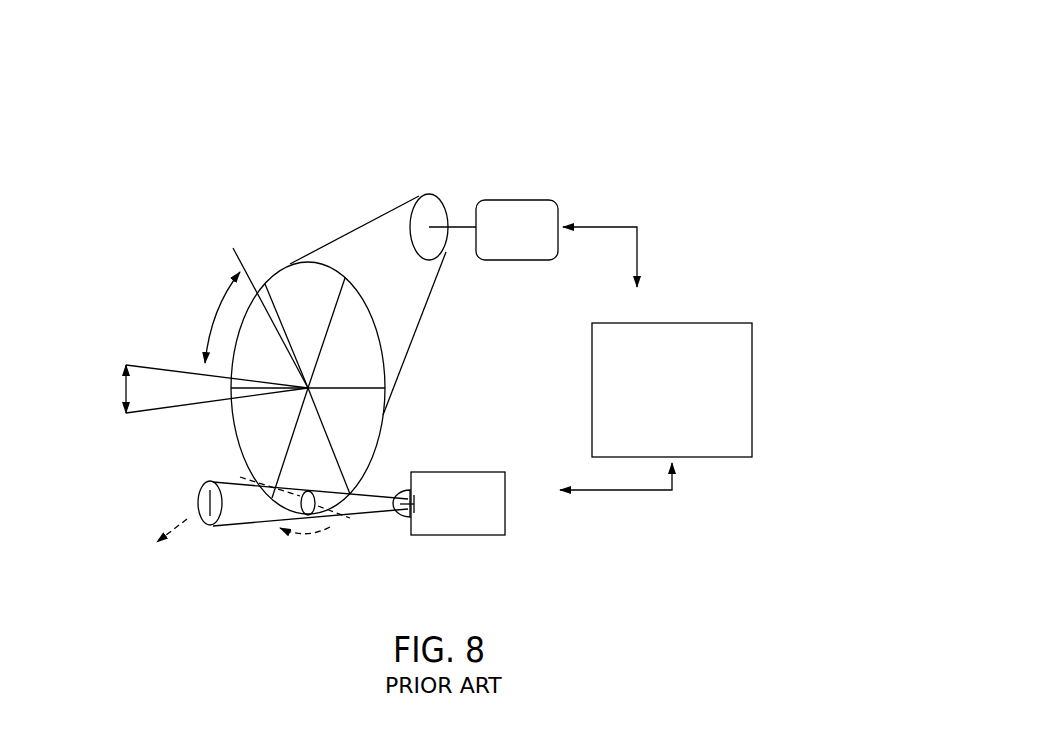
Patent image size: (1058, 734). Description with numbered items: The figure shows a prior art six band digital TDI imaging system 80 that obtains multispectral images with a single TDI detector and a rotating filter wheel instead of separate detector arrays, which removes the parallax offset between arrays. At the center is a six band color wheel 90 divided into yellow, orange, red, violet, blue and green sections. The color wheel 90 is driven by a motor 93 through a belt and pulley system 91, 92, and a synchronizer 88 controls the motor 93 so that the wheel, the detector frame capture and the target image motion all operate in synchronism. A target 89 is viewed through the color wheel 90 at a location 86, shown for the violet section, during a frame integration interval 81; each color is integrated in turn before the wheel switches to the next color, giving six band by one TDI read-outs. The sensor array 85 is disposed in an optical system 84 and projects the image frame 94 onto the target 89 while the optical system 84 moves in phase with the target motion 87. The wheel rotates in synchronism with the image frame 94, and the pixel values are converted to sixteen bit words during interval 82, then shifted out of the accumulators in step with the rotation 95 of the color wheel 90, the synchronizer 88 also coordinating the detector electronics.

The system 80 is at (672, 95).
The frame integration interval 81 is at (208, 320).
The interval 82 is at (120, 389).
The optical system 84 is at (476, 470).
The sensor array 85 is at (418, 508).
The location 86 is at (320, 506).
The target motion 87 is at (190, 522).
The synchronizer 88 is at (752, 355).
The target 89 is at (196, 480).
The color wheel 90 is at (235, 445).
The pulley system 91 is at (351, 227).
The pulley system 92 is at (429, 192).
The motor 93 is at (540, 198).
The image frame 94 is at (200, 497).
The rotation 95 is at (311, 535).